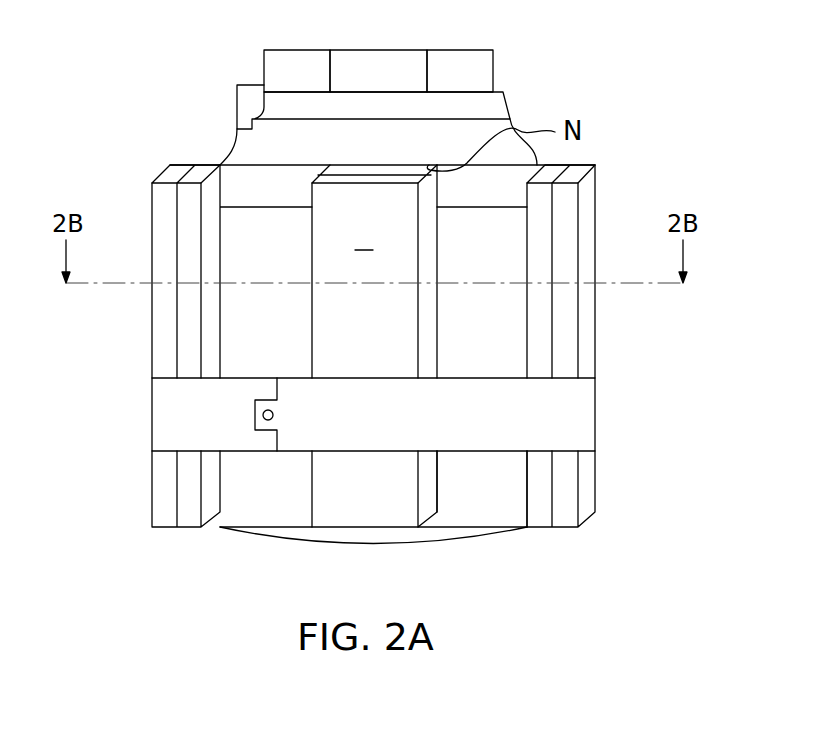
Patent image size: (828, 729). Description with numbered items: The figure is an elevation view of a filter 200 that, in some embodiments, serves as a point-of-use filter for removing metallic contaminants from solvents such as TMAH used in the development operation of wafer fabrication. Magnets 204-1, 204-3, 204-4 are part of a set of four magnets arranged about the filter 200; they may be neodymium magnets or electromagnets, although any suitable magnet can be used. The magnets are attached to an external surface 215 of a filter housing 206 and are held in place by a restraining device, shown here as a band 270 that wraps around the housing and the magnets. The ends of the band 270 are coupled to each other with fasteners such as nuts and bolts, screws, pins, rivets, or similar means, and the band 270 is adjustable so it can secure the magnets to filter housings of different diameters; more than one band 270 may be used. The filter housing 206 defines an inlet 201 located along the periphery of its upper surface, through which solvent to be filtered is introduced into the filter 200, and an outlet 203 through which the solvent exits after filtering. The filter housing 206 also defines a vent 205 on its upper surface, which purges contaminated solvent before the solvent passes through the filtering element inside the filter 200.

The filter 200 is at (236, 140).
The inlet 201 is at (287, 58).
The outlet 203 is at (380, 58).
The vent 205 is at (493, 65).
The magnet 204-1 is at (597, 330).
The magnet 204-3 is at (150, 345).
The magnet 204-4 is at (337, 505).
The filter housing 206 is at (500, 505).
The external surface 215 is at (505, 359).
The band 270 is at (257, 377).